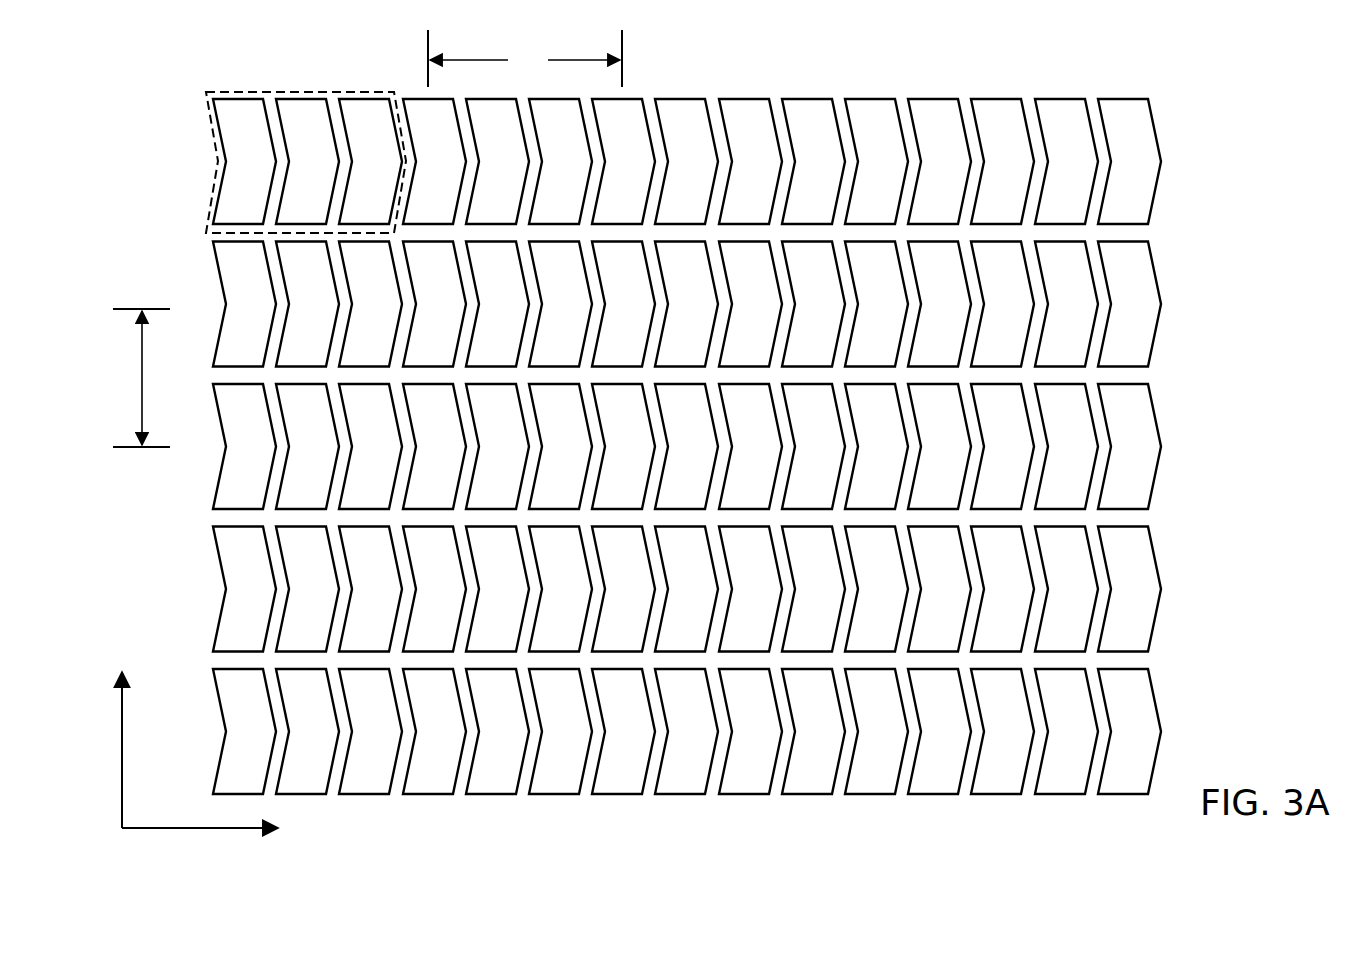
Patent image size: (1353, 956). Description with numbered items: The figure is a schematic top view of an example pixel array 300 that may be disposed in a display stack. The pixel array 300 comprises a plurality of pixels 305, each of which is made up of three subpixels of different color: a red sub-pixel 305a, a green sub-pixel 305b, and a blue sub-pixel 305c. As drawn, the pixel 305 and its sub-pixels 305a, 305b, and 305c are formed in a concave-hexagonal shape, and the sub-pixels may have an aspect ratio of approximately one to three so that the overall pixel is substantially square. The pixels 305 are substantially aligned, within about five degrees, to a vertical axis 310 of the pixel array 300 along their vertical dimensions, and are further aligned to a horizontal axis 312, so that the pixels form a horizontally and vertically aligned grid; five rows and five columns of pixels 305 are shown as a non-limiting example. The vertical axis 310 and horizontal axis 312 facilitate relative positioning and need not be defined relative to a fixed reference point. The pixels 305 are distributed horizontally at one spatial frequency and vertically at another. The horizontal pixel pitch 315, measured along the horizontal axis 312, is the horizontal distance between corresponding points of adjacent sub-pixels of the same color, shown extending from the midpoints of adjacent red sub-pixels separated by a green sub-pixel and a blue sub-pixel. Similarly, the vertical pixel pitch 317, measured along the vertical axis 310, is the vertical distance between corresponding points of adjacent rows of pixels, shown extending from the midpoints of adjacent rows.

The pixel array 300 is at (152, 80).
The pixel 305 is at (262, 92).
The red sub-pixel 305a is at (244, 161).
The green sub-pixel 305b is at (307, 161).
The blue sub-pixel 305c is at (370, 161).
The vertical axis 310 is at (120, 748).
The horizontal axis 312 is at (145, 826).
The horizontal pixel pitch 315 is at (624, 45).
The vertical pixel pitch 317 is at (152, 449).